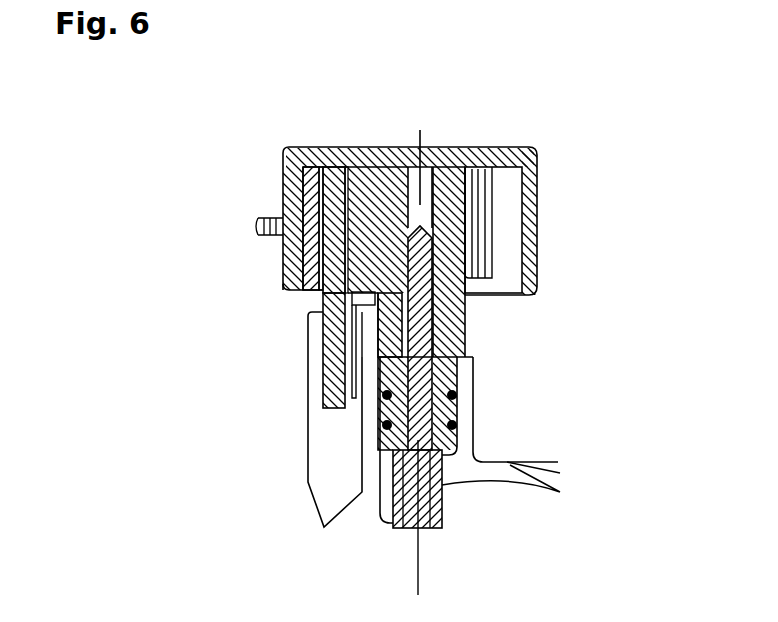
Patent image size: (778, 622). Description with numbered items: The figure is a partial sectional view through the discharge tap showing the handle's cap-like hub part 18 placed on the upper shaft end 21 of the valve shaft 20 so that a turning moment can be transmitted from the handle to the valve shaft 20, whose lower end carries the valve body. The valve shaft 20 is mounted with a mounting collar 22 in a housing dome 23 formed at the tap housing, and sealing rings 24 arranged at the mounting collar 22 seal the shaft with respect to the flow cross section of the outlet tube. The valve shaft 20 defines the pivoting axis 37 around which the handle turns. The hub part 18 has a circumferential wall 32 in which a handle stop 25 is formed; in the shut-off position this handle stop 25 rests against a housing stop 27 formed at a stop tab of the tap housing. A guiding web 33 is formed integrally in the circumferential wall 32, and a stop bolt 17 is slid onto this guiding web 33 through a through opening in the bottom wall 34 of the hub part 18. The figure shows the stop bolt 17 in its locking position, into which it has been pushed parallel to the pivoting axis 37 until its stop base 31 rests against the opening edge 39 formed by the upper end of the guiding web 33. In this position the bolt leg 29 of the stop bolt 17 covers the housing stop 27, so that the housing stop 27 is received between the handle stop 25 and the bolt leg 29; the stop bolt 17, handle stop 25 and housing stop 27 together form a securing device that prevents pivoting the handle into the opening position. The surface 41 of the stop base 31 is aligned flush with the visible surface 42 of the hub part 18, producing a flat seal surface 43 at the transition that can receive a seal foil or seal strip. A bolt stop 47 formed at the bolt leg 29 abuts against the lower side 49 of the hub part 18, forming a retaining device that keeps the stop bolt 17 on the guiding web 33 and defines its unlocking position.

The stop bolt 17 is at (320, 141).
The hub part 18 is at (525, 147).
The valve shaft 20 is at (462, 348).
The upper shaft end 21 is at (427, 263).
The mounting collar 22 is at (447, 417).
The housing dome 23 is at (470, 440).
The sealing rings 24 is at (382, 427).
The handle stop 25 is at (498, 523).
The housing stop 27 is at (313, 415).
The bolt leg 29 is at (327, 375).
The stop base 31 is at (290, 188).
The circumferential wall 32 is at (524, 180).
The guiding web 33 is at (283, 280).
The bottom wall 34 is at (435, 148).
The pivoting axis 37 is at (422, 566).
The opening edge 39 is at (290, 148).
The surface of the stop base 41 is at (334, 148).
The visible surface 42 is at (498, 148).
The seal surface 43 is at (362, 140).
The bolt stop 47 is at (313, 357).
The lower side 49 is at (323, 325).